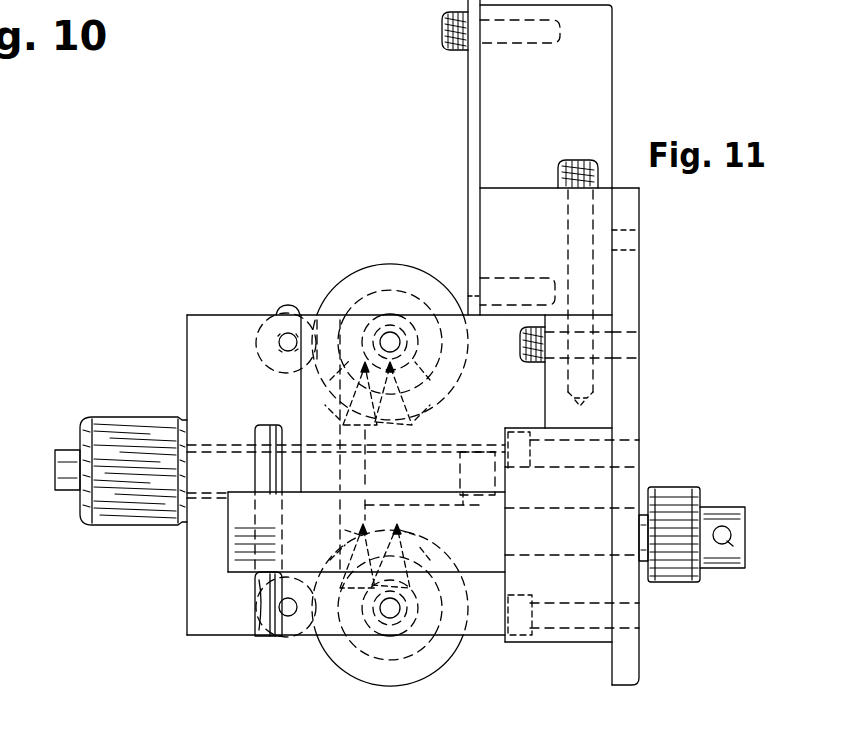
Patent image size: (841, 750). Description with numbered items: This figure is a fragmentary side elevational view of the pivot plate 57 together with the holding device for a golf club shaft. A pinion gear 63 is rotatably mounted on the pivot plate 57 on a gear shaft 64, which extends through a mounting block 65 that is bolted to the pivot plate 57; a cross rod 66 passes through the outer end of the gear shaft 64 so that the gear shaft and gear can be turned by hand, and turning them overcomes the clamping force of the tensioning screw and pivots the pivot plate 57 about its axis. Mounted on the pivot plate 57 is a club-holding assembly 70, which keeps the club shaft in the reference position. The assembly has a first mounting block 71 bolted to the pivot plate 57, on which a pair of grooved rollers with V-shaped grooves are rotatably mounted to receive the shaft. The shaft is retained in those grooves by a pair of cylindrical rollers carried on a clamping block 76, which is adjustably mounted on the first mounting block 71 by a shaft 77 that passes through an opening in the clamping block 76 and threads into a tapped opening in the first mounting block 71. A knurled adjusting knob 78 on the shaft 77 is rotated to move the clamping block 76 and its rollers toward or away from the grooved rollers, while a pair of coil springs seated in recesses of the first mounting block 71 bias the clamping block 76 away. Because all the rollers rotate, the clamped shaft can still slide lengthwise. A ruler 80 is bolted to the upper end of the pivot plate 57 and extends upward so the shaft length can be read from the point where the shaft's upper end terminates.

The pivot plate 57 is at (626, 285).
The pinion gear 63 is at (676, 487).
The gear shaft 64 is at (646, 565).
The mounting block 65 is at (592, 425).
The cross rod 66 is at (262, 425).
The club-holding assembly 70 is at (229, 312).
The first mounting block 71 is at (462, 622).
The clamping block 76 is at (196, 593).
The shaft 77 is at (62, 466).
The knurled adjusting knob 78 is at (112, 418).
The ruler 80 is at (468, 97).